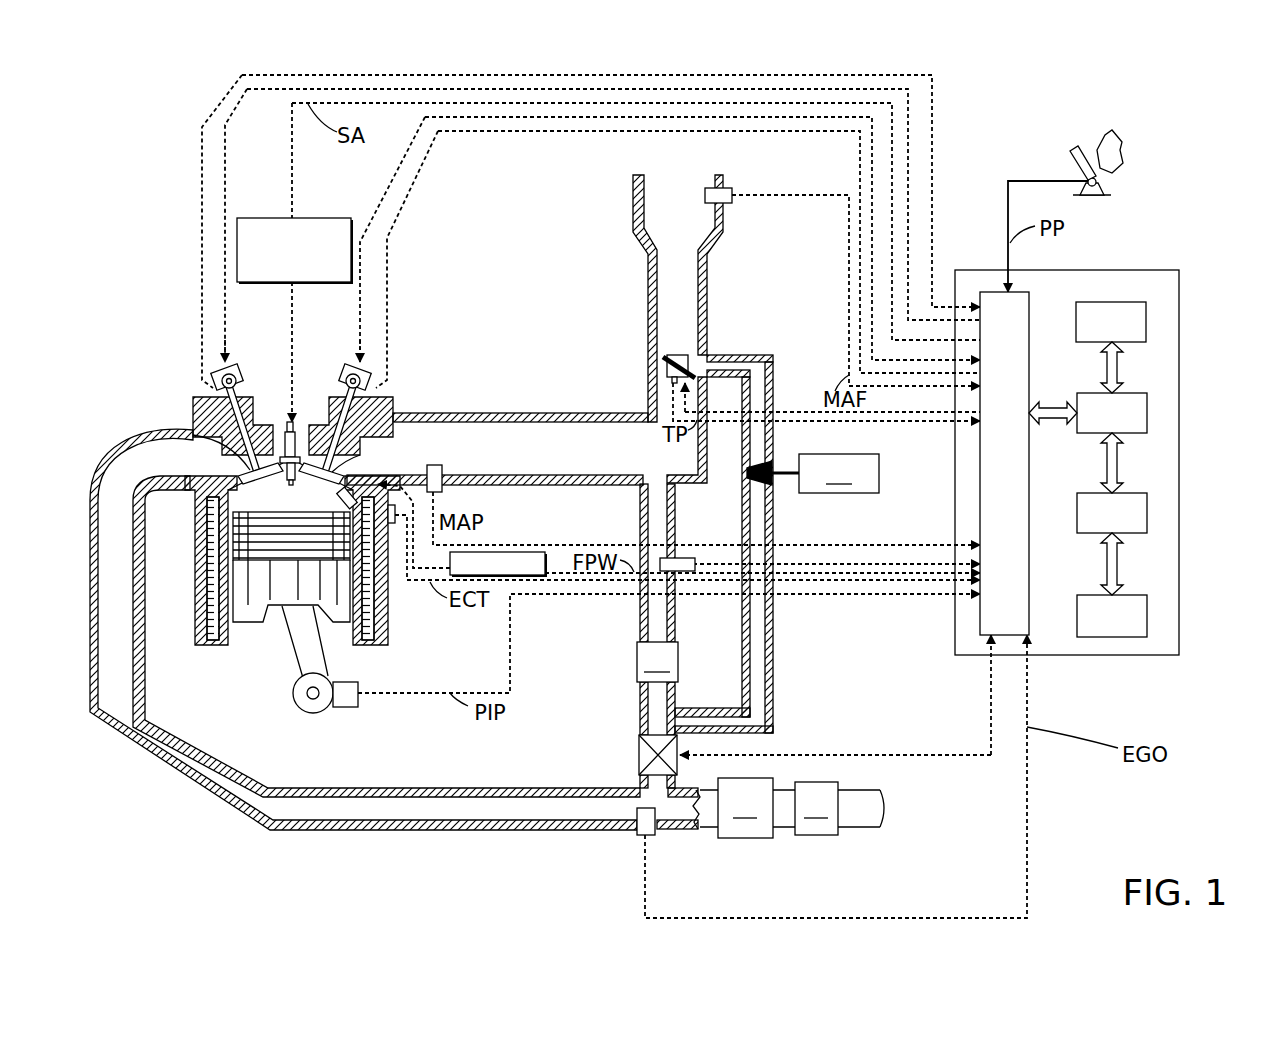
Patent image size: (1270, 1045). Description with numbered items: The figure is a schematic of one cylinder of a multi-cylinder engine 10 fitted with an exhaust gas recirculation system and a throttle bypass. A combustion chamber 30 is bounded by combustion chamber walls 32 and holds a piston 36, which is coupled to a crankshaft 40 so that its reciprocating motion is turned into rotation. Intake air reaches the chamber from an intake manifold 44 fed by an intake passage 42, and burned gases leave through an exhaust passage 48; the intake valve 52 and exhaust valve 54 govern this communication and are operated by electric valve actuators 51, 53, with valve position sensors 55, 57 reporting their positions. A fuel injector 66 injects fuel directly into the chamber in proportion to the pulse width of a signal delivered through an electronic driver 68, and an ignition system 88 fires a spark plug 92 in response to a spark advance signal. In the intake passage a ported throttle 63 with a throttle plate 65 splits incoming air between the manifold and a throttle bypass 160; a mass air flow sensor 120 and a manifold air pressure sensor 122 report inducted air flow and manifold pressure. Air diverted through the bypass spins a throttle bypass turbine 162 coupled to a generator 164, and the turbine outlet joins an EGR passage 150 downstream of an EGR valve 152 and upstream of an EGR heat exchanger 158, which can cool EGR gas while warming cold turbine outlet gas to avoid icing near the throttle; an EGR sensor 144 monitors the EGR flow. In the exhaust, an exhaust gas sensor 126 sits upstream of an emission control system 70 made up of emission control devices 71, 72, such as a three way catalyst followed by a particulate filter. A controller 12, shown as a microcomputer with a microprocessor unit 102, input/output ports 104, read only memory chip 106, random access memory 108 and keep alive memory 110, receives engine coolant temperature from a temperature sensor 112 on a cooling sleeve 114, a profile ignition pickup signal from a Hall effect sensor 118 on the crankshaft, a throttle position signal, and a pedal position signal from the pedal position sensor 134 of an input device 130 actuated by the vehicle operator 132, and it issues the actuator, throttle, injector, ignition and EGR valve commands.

The engine 10 is at (130, 352).
The controller 12 is at (1112, 450).
The combustion chamber 30 is at (232, 577).
The combustion chamber walls 32 is at (236, 628).
The piston 36 is at (277, 595).
The crankshaft 40 is at (306, 712).
The intake passage 42 is at (666, 223).
The intake manifold 44 is at (457, 448).
The exhaust passage 48 is at (149, 471).
The electric valve actuator 51 is at (342, 358).
The intake valve 52 is at (335, 472).
The electric valve actuator 53 is at (244, 358).
The exhaust valve 54 is at (222, 435).
The valve position sensor 55 is at (370, 386).
The valve position sensor 57 is at (218, 372).
The throttle 63 is at (670, 357).
The throttle plate 65 is at (666, 362).
The fuel injector 66 is at (338, 495).
The electronic driver 68 is at (450, 562).
The emission control system 70 is at (770, 839).
The emission control device 71 is at (745, 808).
The emission control device 72 is at (816, 808).
The ignition system 88 is at (252, 218).
The spark plug 92 is at (294, 428).
The microprocessor unit 102 is at (1147, 410).
The input/output ports 104 is at (1030, 300).
The read only memory chip 106 is at (1147, 320).
The random access memory 108 is at (1147, 512).
The keep alive memory 110 is at (1147, 612).
The temperature sensor 112 is at (393, 525).
The cooling sleeve 114 is at (385, 605).
The Hall effect sensor 118 is at (347, 708).
The mass air flow sensor 120 is at (729, 190).
The manifold air pressure sensor 122 is at (430, 467).
The exhaust gas sensor 126 is at (652, 836).
The input device 130 is at (1077, 160).
The vehicle operator 132 is at (1121, 145).
The pedal position sensor 134 is at (1120, 182).
The EGR sensor 144 is at (693, 565).
The EGR passage 150 is at (642, 605).
The EGR valve 152 is at (640, 742).
The EGR heat exchanger 158 is at (657, 662).
The throttle bypass 160 is at (765, 356).
The throttle bypass turbine 162 is at (744, 472).
The generator 164 is at (825, 473).